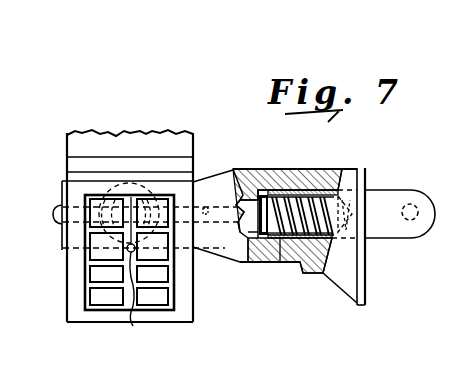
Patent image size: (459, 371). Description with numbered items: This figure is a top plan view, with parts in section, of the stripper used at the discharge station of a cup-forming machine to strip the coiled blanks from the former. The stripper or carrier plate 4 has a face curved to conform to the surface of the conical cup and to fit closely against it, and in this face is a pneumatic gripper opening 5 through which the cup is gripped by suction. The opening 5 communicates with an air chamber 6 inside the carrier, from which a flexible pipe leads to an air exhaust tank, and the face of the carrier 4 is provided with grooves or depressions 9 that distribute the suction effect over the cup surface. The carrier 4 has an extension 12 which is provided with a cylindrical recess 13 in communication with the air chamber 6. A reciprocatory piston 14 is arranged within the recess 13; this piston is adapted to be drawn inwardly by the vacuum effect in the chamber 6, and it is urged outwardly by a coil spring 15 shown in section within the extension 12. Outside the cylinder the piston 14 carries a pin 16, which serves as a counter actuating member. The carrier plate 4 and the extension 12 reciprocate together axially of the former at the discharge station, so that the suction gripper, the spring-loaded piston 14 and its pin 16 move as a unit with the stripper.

The stripper 4 is at (128, 143).
The pneumatic gripper opening 5 is at (132, 272).
The air chamber 6 is at (240, 176).
The grooves or depressions 9 is at (85, 272).
The extension 12 is at (300, 182).
The cylindrical recess 13 is at (268, 190).
The reciprocatory piston 14 is at (297, 262).
The coil spring 15 is at (272, 262).
The pin 16 is at (409, 204).